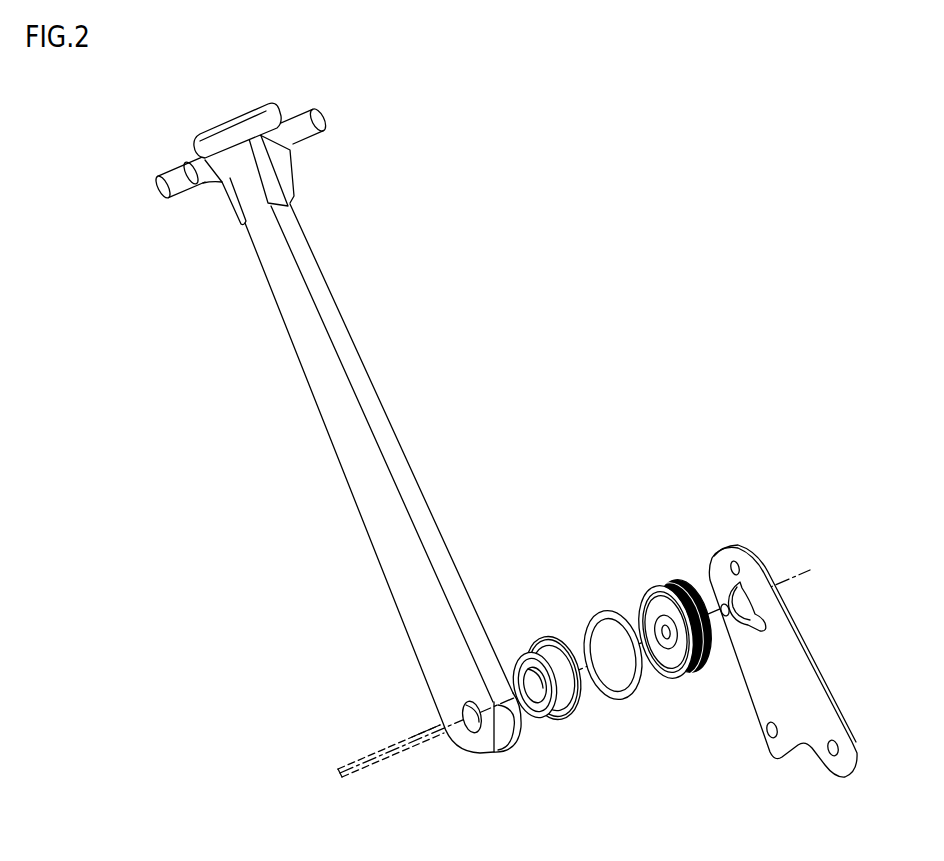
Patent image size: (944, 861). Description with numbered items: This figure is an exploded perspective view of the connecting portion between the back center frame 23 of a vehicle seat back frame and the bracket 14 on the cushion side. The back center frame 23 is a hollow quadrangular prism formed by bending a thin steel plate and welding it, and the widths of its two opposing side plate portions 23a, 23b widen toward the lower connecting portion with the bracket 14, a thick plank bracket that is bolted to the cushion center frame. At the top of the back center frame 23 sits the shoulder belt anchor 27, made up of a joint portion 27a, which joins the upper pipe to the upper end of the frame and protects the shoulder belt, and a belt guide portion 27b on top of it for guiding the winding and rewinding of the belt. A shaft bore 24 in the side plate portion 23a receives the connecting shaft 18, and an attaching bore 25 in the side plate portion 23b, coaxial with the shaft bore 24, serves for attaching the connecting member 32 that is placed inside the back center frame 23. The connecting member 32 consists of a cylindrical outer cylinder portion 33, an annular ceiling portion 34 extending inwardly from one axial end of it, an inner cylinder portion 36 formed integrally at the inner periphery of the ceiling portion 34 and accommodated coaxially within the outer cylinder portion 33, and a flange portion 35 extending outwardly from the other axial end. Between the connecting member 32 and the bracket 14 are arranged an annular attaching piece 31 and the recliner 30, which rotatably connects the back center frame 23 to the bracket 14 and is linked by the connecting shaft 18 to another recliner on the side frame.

The bracket 14 is at (797, 662).
The connecting shaft 18 is at (363, 758).
The back center frame 23 is at (358, 510).
The side plate portion 23a is at (415, 597).
The side plate portion 23b is at (453, 583).
The shaft bore 24 is at (467, 724).
The attaching bore 25 is at (505, 733).
The shoulder belt anchor 27 is at (193, 163).
The joint portion 27a is at (162, 171).
The belt guide portion 27b is at (196, 134).
The recliner 30 is at (668, 568).
The annular attaching piece 31 is at (602, 600).
The connecting member 32 is at (559, 672).
The outer cylinder portion 33 is at (553, 677).
The ceiling portion 34 is at (545, 718).
The flange portion 35 is at (584, 703).
The inner cylinder portion 36 is at (522, 670).